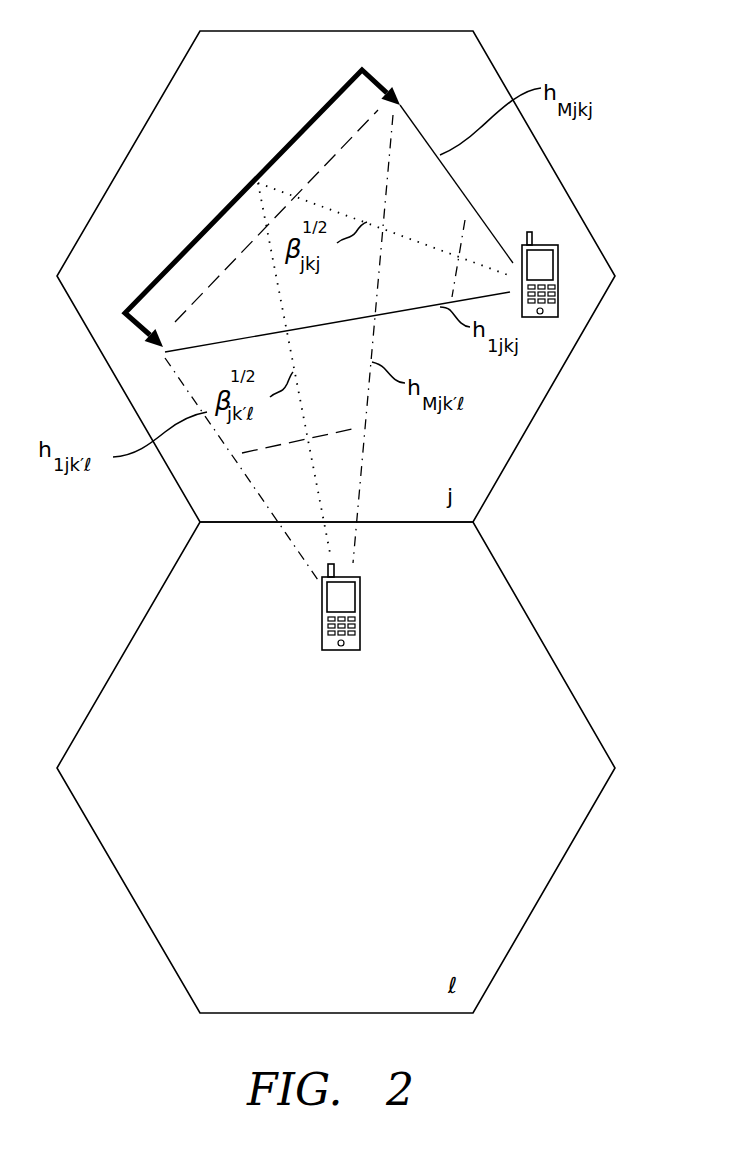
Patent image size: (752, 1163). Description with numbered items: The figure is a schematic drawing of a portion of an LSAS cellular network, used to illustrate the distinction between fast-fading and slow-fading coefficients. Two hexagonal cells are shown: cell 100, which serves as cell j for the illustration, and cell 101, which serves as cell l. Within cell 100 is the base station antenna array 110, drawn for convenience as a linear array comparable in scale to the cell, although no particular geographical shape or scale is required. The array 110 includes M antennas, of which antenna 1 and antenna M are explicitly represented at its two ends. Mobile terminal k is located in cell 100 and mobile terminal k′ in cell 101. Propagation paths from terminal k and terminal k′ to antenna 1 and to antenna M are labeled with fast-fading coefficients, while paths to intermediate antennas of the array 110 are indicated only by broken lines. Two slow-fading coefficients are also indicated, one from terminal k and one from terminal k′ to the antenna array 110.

The cell 100 is at (558, 176).
The cell 101 is at (543, 643).
The base station antenna array 110 is at (254, 213).
The antenna 1 is at (158, 346).
The antenna M is at (398, 100).
The mobile terminal k is at (562, 260).
The mobile terminal k′ is at (362, 627).